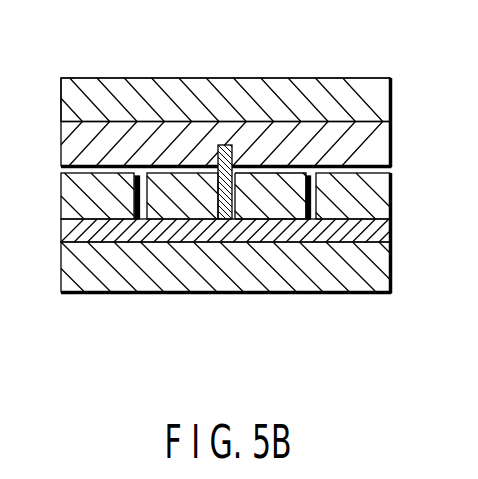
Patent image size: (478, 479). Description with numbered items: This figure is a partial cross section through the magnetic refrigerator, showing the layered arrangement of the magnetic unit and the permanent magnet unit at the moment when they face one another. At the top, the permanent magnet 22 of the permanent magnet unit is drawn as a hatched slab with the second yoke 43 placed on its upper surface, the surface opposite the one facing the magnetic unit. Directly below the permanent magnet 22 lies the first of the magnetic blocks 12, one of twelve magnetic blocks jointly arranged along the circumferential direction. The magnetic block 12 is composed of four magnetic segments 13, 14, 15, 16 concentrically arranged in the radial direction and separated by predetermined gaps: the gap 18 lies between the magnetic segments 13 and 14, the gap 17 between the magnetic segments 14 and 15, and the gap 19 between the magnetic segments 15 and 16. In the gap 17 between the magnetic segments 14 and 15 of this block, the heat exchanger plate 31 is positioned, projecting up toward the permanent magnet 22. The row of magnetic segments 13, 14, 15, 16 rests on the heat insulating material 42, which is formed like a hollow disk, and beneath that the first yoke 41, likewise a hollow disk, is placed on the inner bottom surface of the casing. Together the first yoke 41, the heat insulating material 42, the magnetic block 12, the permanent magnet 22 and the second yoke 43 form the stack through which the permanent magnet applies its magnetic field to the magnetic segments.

The magnetic block 12 is at (105, 331).
The magnetic segment 13 is at (340, 208).
The magnetic segment 14 is at (267, 210).
The magnetic segment 15 is at (190, 208).
The magnetic segment 16 is at (108, 210).
The gap 17 is at (236, 179).
The gap 18 is at (308, 178).
The gap 19 is at (138, 168).
The permanent magnet 22 is at (383, 143).
The heat exchanger plate 31 is at (228, 146).
The first yoke 41 is at (377, 272).
The heat insulating material 42 is at (378, 230).
The second yoke 43 is at (173, 100).